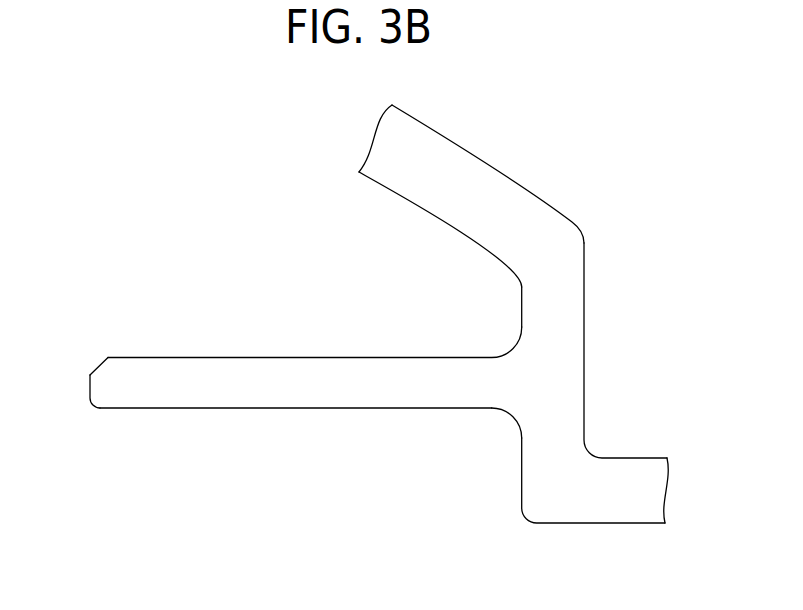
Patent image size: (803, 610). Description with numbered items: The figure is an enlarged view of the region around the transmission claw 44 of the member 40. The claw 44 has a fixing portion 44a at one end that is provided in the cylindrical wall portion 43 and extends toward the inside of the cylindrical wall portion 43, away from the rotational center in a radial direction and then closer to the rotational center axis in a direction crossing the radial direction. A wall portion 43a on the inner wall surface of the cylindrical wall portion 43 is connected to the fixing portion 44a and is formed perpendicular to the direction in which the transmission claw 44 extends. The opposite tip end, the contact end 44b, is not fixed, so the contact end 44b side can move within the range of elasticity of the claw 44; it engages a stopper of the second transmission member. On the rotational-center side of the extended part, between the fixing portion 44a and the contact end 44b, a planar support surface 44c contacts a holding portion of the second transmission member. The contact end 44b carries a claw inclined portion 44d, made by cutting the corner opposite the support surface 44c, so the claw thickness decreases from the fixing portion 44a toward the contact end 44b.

The conductive member (terminal) 40 is at (580, 205).
The cylindrical wall portion 43 is at (475, 172).
The wall portion 43a is at (545, 380).
The transmission claw 44 is at (286, 389).
The fixing portion 44a is at (510, 392).
The contact end 44b is at (100, 385).
The support surface 44c is at (297, 408).
The claw inclined portion 44d is at (100, 366).